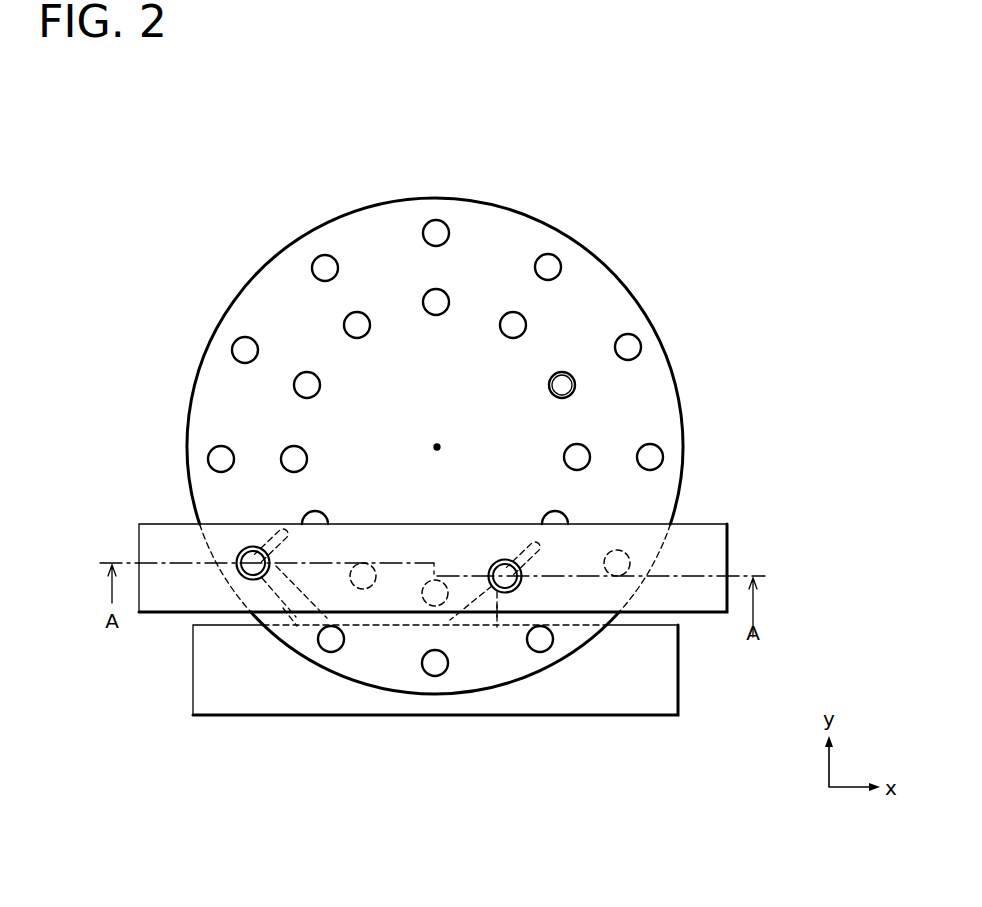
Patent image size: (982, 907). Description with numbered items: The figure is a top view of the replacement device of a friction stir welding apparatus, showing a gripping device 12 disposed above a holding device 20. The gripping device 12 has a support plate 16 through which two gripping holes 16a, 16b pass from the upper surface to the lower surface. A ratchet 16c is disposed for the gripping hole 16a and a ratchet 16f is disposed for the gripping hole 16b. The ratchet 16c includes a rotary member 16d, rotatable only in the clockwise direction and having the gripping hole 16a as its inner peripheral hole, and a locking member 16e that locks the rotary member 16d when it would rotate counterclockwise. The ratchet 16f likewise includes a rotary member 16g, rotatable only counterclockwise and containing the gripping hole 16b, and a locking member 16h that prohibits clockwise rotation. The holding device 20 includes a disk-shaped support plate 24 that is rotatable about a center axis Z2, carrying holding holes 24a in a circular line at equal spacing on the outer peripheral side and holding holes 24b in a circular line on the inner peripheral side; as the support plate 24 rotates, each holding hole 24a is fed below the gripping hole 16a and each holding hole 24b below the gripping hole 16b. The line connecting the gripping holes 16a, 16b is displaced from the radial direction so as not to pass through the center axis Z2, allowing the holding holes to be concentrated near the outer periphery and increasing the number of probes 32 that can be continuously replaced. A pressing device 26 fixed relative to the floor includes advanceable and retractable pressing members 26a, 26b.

The gripping device 12 is at (724, 510).
The support plate 16 is at (432, 559).
The gripping hole 16a is at (247, 570).
The gripping hole 16b is at (514, 584).
The ratchet 16c is at (266, 548).
The rotary member 16d is at (245, 551).
The locking member 16e is at (290, 544).
The ratchet 16f is at (518, 537).
The rotary member 16g is at (502, 562).
The locking member 16h is at (545, 548).
The holding device 20 is at (438, 420).
The support plate 24 is at (435, 420).
The holding hole 24a is at (440, 227).
The holding hole 24b is at (562, 374).
The pressing device 26 is at (482, 663).
The pressing member 26a is at (290, 620).
The pressing member 26b is at (498, 628).
The probe 32 is at (572, 386).
The center axis Z2 is at (441, 443).